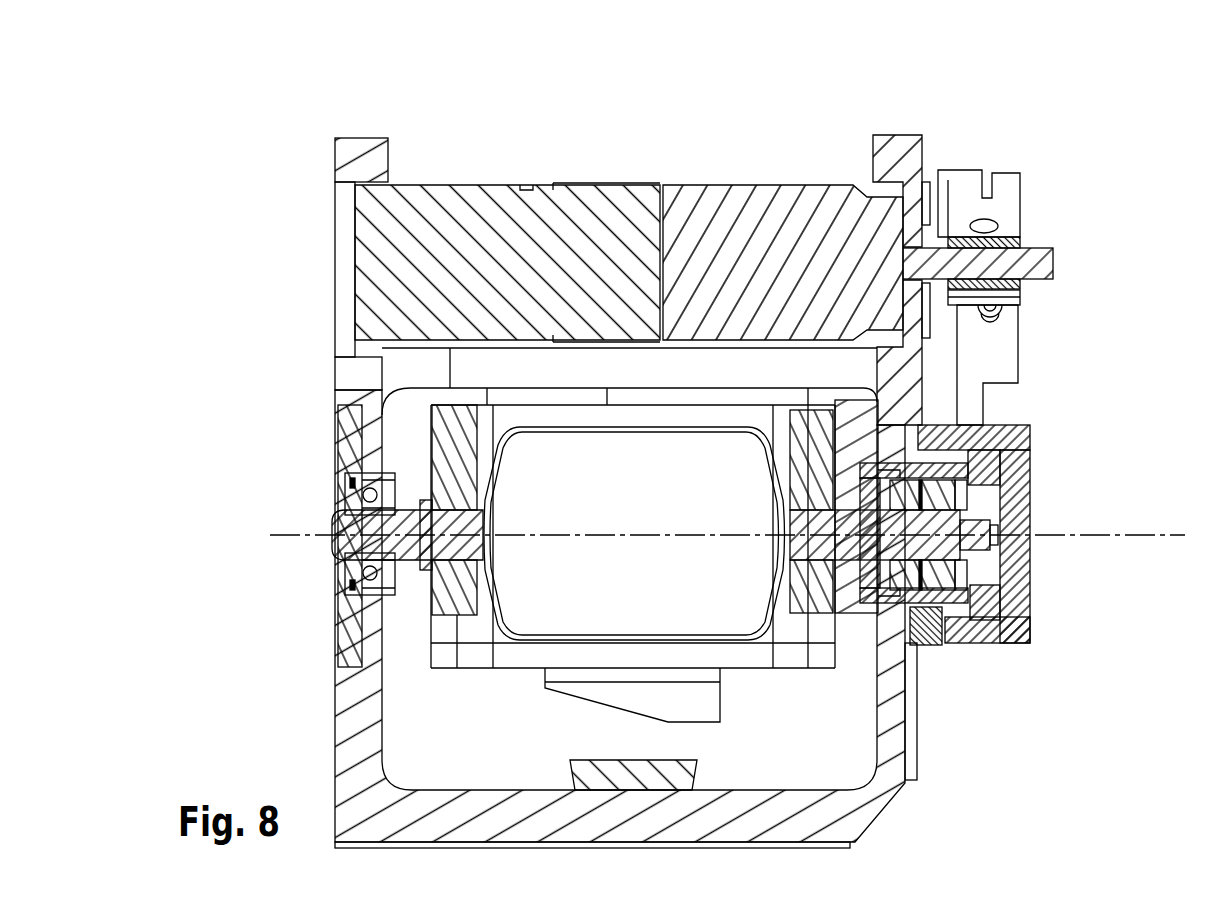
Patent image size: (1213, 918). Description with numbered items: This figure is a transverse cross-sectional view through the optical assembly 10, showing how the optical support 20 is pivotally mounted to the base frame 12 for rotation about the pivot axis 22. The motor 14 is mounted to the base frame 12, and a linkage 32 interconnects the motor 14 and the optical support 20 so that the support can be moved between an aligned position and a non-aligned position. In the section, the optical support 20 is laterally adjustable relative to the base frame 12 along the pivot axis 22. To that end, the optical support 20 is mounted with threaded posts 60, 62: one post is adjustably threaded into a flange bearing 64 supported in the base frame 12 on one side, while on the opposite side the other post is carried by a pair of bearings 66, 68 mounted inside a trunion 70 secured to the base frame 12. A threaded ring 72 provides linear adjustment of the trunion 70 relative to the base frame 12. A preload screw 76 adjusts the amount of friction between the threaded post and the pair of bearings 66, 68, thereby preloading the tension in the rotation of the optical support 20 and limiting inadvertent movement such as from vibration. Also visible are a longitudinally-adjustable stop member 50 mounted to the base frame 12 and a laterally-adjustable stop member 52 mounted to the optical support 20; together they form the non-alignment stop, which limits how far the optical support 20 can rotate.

The optical assembly 10 is at (288, 117).
The base frame 12 is at (355, 148).
The motor 14 is at (435, 193).
The optical support 20 is at (437, 657).
The pivot axis 22 is at (1158, 538).
The linkage 32 is at (990, 145).
The longitudinally-adjustable stop member 50 is at (573, 780).
The laterally-adjustable stop member 52 is at (575, 688).
The threaded post 60 is at (342, 542).
The threaded post 62 is at (848, 565).
The flange bearing 64 is at (345, 495).
The bearing 66 is at (902, 477).
The bearing 68 is at (955, 492).
The trunion 70 is at (945, 470).
The threaded ring 72 is at (993, 588).
The preload screw 76 is at (982, 512).